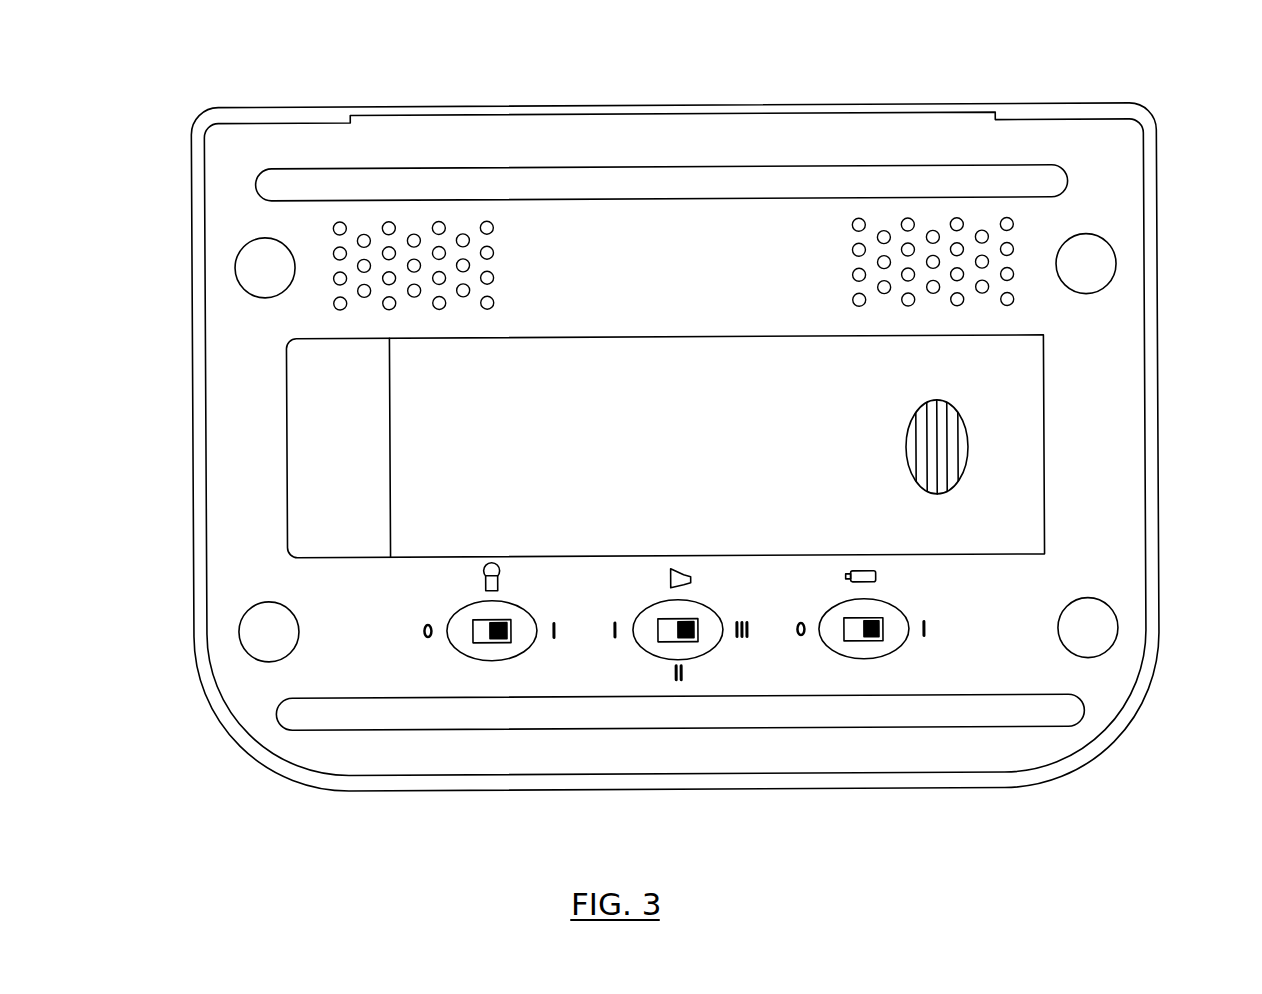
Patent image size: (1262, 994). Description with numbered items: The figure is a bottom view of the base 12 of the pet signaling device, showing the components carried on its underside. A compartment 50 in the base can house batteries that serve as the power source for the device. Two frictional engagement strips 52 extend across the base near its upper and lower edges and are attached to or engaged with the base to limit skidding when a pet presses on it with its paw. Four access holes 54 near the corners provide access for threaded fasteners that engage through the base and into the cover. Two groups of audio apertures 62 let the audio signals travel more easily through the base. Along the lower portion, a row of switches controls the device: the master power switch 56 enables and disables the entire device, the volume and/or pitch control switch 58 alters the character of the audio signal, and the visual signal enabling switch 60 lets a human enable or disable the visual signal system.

The base 12 is at (1159, 537).
The compartment 50 is at (1012, 377).
The frictional engagement strips 52 is at (633, 167).
The access holes 54 is at (245, 270).
The master power switch 56 is at (815, 675).
The volume and/or pitch control switch 58 is at (620, 672).
The visual signal enabling switch 60 is at (430, 668).
The audio apertures 62 is at (370, 200).